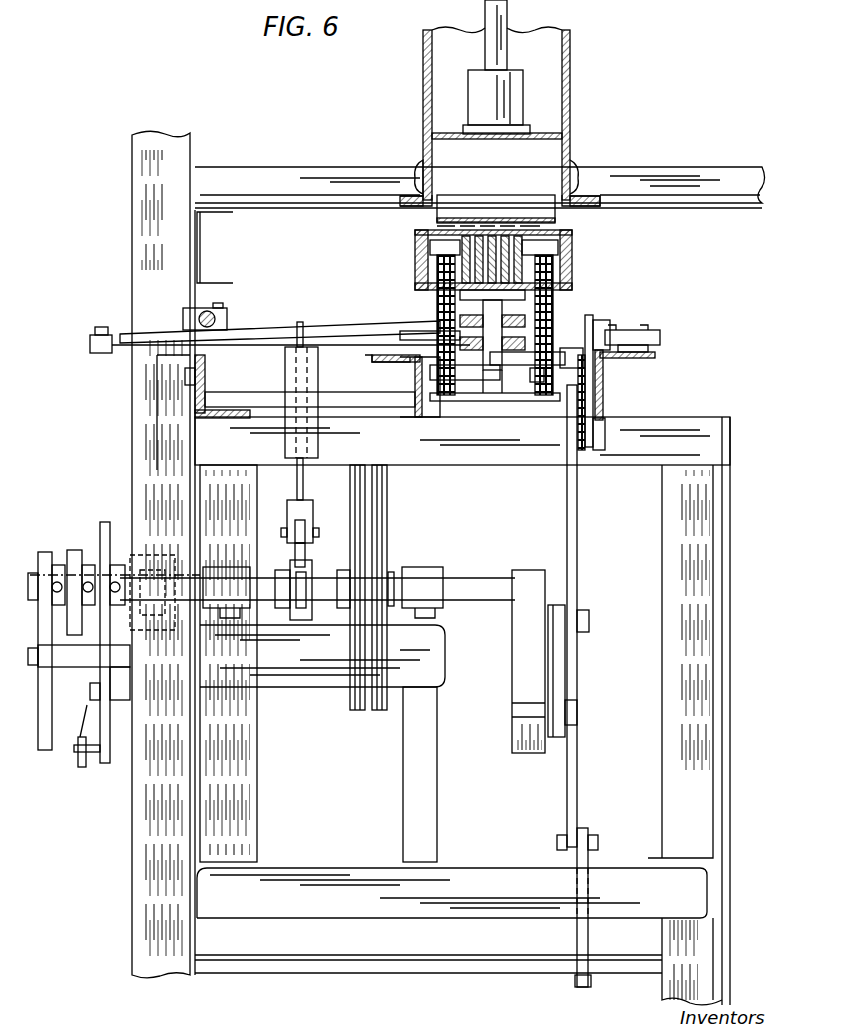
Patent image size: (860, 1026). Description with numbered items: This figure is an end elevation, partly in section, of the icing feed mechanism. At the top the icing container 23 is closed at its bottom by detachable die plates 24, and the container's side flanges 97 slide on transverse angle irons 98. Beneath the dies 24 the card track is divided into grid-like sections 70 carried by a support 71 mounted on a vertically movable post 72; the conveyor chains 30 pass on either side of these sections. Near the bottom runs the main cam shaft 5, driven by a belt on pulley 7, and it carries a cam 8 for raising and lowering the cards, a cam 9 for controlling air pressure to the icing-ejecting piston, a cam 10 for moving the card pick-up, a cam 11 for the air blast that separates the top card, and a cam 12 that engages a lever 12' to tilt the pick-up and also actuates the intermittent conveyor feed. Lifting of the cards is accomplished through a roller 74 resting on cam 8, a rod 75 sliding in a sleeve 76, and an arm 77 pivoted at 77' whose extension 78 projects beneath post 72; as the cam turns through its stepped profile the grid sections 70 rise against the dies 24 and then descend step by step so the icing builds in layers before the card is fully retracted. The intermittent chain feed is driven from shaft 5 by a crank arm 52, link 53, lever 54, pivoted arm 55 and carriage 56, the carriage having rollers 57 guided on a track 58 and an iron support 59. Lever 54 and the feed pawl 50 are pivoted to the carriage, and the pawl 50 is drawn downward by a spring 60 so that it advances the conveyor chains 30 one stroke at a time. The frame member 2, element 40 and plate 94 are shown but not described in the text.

The clutch housing 2 is at (560, 232).
The main cam shaft 5 is at (458, 578).
The pulley 7 is at (362, 712).
The cam 8 is at (305, 562).
The cam 9 is at (155, 555).
The cam 10 is at (105, 522).
The cam 11 is at (73, 550).
The cam 12 is at (46, 618).
The lever 12' is at (79, 725).
The container 23 is at (570, 92).
The die plates 24 is at (478, 220).
The chains 30 is at (555, 300).
The lever 40 is at (105, 765).
The feed pawl 50 is at (542, 392).
The crank arm 52 is at (512, 665).
The link 53 is at (555, 680).
The lever 54 is at (578, 574).
The pivoted arm 55 is at (590, 858).
The carriage 56 is at (592, 318).
The rollers 57 is at (612, 330).
The track 58 is at (640, 346).
The iron support 59 is at (604, 370).
The spring 60 is at (578, 425).
The grid-like sections 70 is at (572, 252).
The support 71 is at (420, 296).
The post 72 is at (495, 380).
The roller 74 is at (303, 530).
The rod 75 is at (297, 480).
The sleeve 76 is at (318, 445).
The arm 77 is at (280, 322).
The pivot 77' is at (228, 301).
The extension 78 is at (495, 383).
The plate 94 is at (548, 136).
The side flanges 97 is at (575, 170).
The angle irons 98 is at (652, 178).